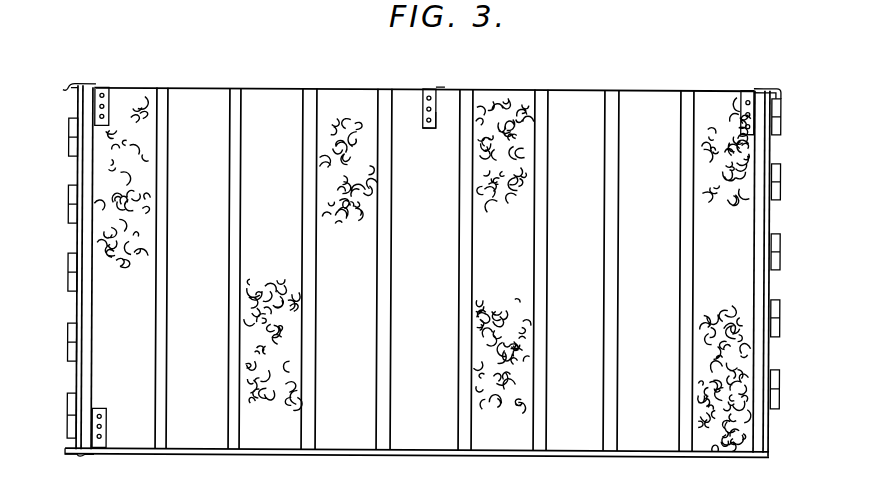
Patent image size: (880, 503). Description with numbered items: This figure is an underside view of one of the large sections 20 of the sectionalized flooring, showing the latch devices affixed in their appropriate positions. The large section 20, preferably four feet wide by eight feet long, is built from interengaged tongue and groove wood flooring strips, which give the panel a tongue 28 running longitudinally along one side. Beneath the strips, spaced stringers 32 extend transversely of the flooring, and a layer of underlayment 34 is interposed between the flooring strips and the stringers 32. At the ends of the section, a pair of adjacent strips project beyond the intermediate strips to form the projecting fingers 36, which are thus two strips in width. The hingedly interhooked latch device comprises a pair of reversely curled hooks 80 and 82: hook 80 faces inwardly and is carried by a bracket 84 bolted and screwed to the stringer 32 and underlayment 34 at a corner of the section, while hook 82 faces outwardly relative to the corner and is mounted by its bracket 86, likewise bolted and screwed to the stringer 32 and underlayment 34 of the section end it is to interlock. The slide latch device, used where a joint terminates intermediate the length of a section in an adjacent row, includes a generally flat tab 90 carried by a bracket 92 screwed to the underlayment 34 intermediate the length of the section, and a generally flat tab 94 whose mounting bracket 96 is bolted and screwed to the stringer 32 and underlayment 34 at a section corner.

The large section 20 is at (262, 120).
The tongue 28 is at (192, 452).
The stringers 32 is at (684, 427).
The underlayment 34 is at (411, 360).
The projecting fingers 36 is at (70, 265).
The reversely curled hook 80 is at (779, 87).
The reversely curled hook 82 is at (66, 84).
The bracket 84 is at (745, 89).
The bracket 86 is at (108, 89).
The flat tab 90 is at (438, 88).
The bracket 92 is at (436, 117).
The flat tab 94 is at (92, 457).
The mounting bracket 96 is at (108, 417).